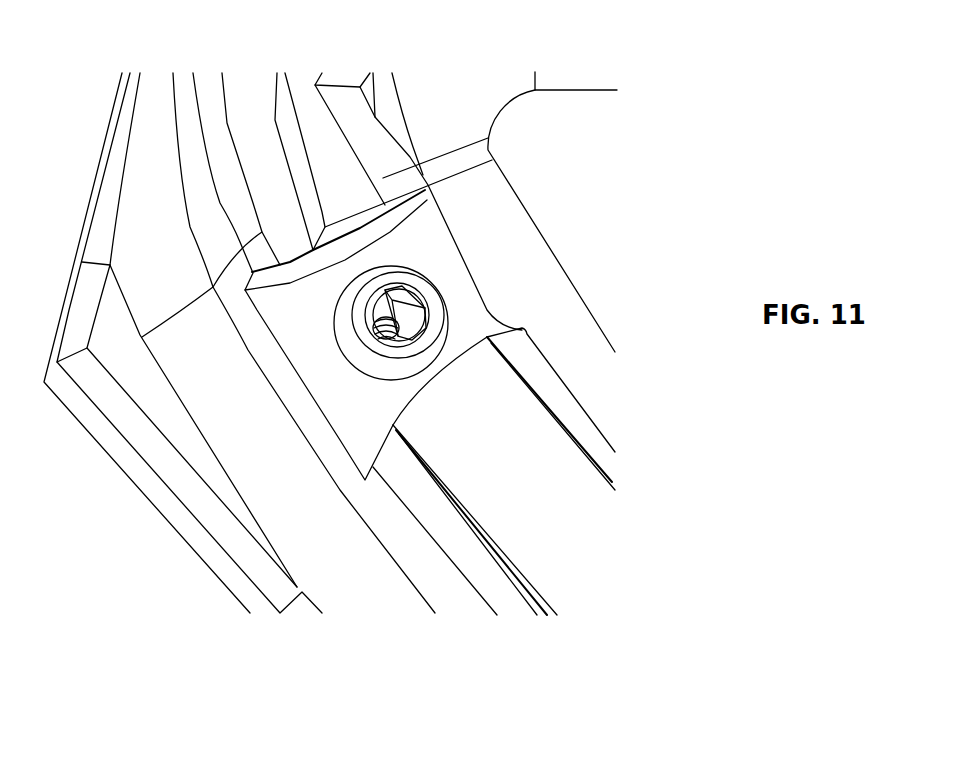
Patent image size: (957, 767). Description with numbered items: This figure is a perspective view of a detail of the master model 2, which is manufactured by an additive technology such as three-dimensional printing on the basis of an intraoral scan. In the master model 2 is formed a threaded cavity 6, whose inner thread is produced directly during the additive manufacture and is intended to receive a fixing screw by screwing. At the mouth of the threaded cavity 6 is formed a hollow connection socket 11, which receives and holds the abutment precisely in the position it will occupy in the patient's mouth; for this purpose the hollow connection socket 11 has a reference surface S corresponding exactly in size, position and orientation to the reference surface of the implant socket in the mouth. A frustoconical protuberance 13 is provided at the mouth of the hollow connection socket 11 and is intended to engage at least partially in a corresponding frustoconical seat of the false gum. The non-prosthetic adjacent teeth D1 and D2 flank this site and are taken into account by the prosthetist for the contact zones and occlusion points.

The master model 2 is at (164, 525).
The threaded cavity 6 is at (425, 300).
The hollow connection socket 11 is at (388, 290).
The frustoconical protuberance 13 is at (447, 323).
The reference surface S is at (395, 312).
The non-prosthetic adjacent tooth D1 is at (488, 138).
The non-prosthetic adjacent tooth D2 is at (470, 380).